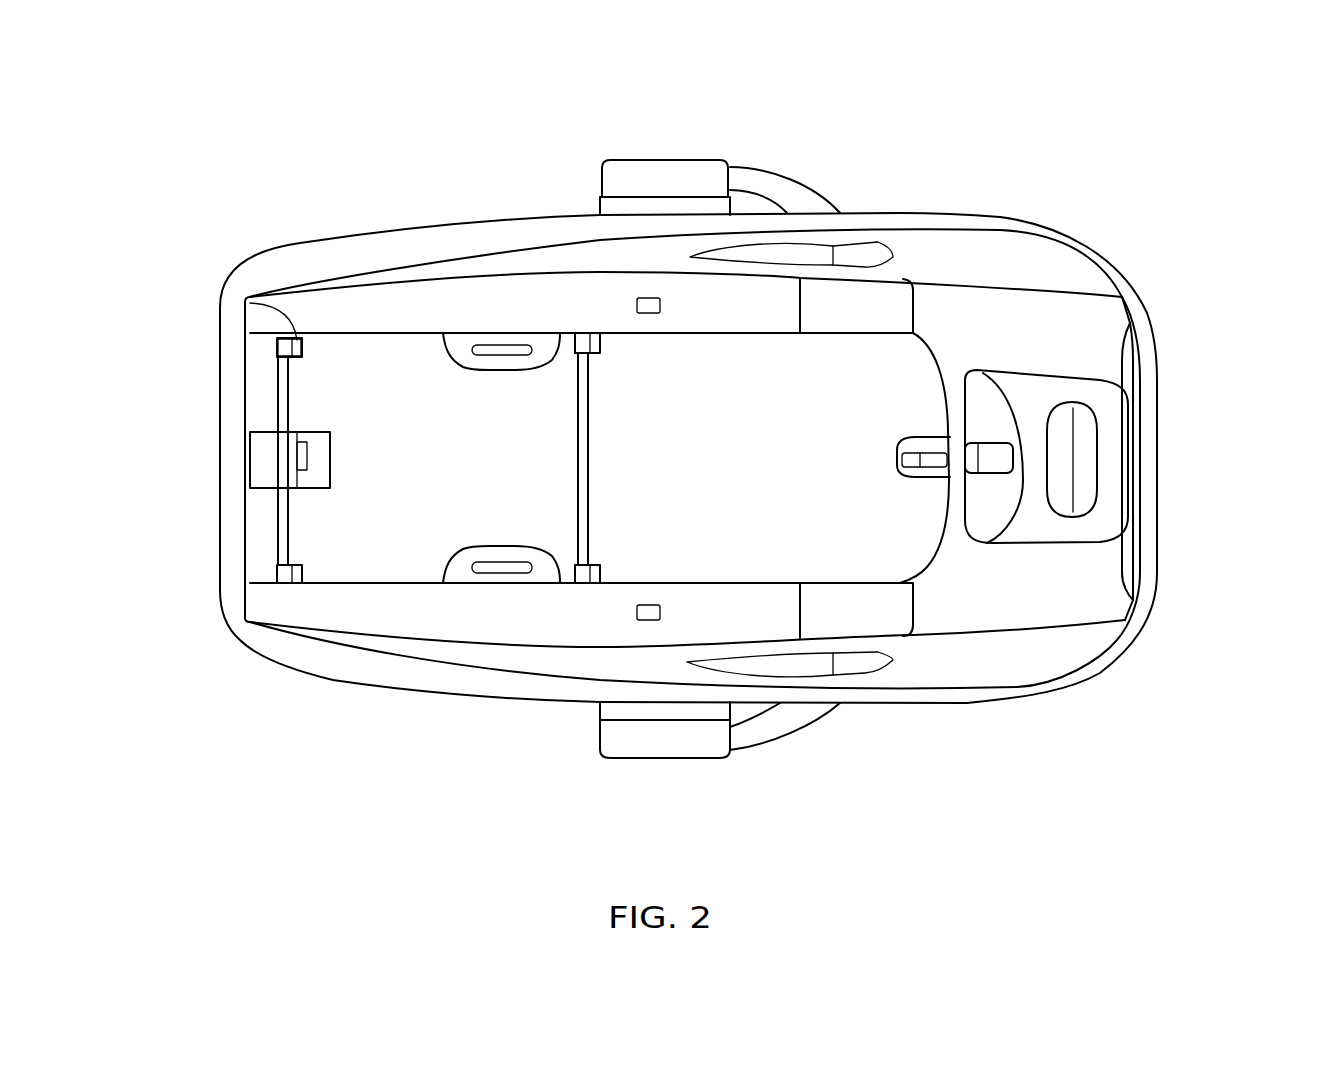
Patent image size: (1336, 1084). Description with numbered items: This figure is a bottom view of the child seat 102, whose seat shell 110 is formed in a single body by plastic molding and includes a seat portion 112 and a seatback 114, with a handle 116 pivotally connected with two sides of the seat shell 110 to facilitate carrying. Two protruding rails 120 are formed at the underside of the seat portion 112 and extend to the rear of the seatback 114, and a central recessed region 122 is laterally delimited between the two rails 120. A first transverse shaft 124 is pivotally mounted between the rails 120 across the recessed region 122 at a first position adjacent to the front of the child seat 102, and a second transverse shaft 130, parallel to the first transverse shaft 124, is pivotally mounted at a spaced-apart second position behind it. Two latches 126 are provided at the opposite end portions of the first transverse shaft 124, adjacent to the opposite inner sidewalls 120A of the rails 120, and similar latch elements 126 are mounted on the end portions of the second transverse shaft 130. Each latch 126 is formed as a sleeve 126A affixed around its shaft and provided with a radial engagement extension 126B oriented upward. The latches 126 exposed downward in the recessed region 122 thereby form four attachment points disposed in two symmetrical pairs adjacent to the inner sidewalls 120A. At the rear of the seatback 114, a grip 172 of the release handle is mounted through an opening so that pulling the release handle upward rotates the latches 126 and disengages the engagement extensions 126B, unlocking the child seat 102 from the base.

The child seat 102 is at (1216, 132).
The seat shell 110 is at (1045, 650).
The seat portion 112 is at (407, 267).
The seatback 114 is at (943, 243).
The handle 116 is at (752, 737).
The protruding rails 120 is at (473, 290).
The inner sidewalls 120A is at (757, 333).
The central recessed region 122 is at (671, 357).
The first transverse shaft 124 is at (280, 508).
The latches 126 is at (583, 340).
The sleeve 126A is at (280, 348).
The radial engagement extension 126B is at (247, 303).
The second transverse shaft 130 is at (586, 527).
The grip 172 is at (1087, 463).